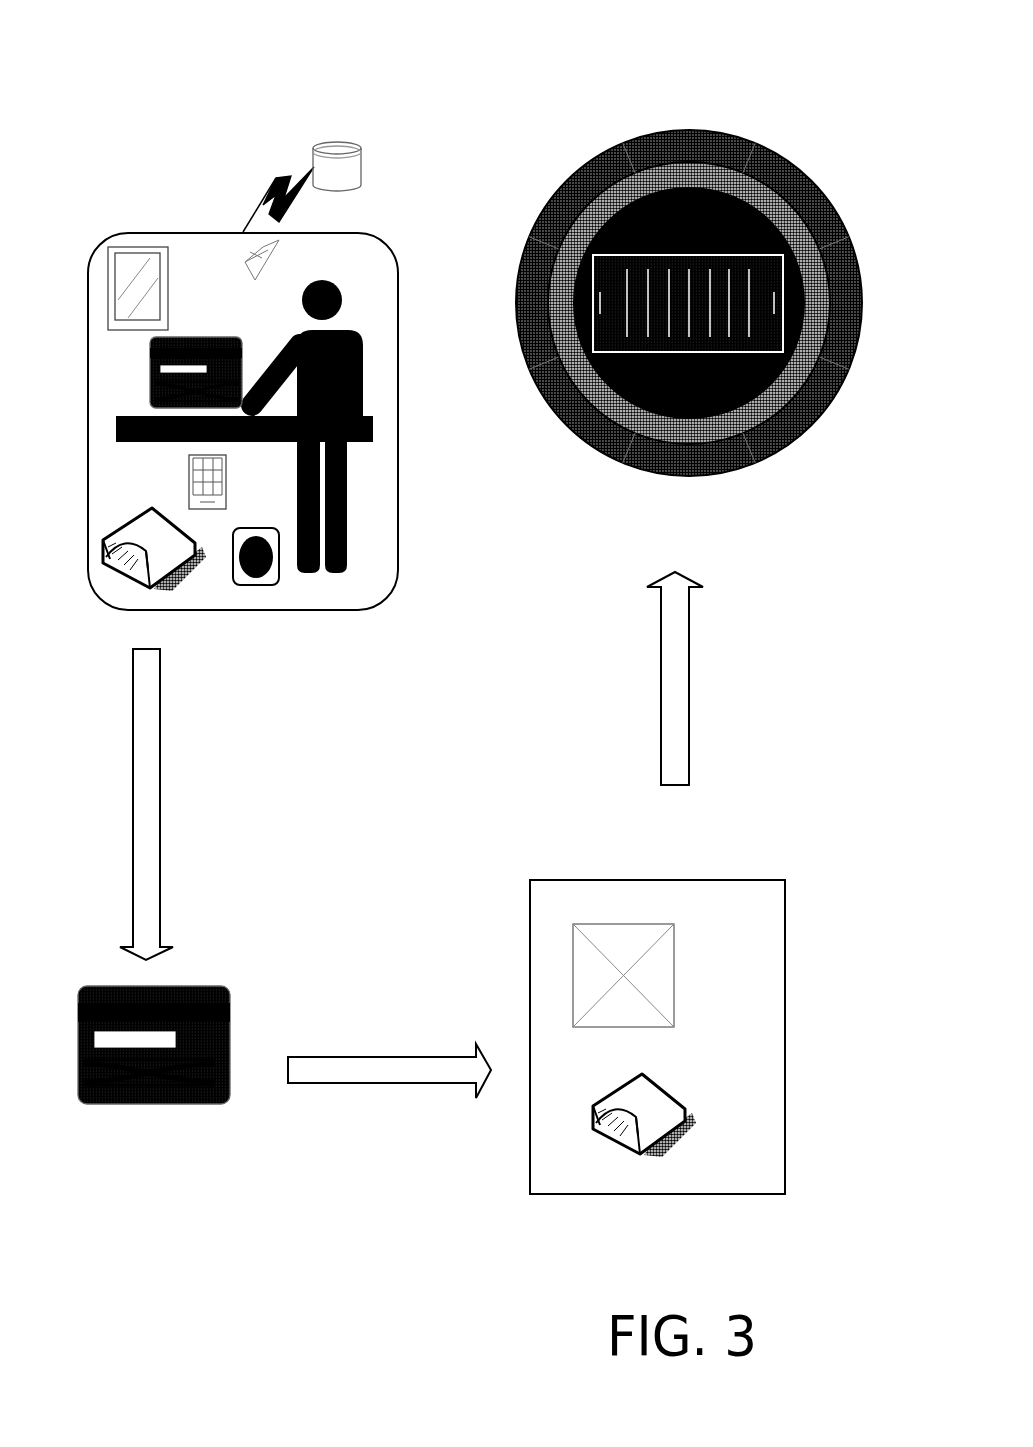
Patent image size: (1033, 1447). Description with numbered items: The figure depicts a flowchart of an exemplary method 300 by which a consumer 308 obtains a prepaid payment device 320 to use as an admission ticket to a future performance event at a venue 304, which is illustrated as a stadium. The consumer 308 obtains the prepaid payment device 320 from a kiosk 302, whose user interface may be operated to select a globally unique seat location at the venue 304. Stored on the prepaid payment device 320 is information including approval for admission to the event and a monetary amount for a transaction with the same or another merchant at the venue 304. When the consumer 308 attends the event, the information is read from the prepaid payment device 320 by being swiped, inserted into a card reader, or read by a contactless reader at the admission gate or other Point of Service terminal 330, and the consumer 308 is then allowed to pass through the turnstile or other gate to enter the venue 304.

The method 300 is at (254, 77).
The kiosk 302 is at (226, 219).
The venue 304 is at (616, 135).
The consumer 308 is at (362, 385).
The prepaid payment device 320 is at (150, 367).
The Point of Service (POS) terminal 330 is at (640, 880).